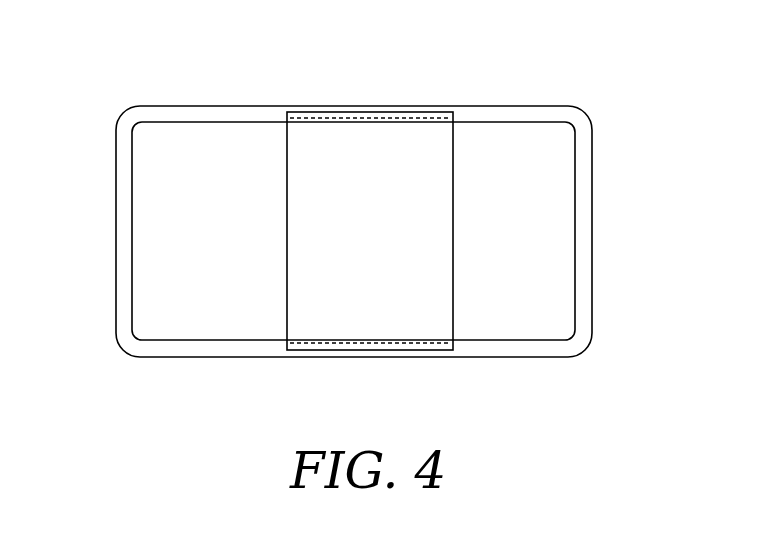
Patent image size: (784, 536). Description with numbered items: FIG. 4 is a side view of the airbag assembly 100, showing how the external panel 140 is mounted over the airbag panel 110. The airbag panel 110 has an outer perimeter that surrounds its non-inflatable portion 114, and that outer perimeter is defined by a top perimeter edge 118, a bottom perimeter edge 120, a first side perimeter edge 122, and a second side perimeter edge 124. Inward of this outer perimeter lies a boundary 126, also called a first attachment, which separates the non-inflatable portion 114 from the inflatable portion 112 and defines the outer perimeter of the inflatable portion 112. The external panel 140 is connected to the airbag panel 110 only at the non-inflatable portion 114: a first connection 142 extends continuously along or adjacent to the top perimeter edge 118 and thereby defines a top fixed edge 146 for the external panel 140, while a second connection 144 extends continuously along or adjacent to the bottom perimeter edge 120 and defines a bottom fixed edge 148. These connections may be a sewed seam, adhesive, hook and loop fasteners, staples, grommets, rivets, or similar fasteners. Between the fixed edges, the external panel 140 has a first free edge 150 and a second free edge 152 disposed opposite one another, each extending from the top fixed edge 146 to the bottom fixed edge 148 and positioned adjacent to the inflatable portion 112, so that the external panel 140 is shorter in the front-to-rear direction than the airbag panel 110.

The airbag assembly 100 is at (80, 37).
The airbag panel 110 is at (322, 231).
The inflatable portion 112 is at (314, 231).
The non-inflatable portion 114 is at (92, 238).
The top perimeter edge 118 is at (523, 81).
The bottom perimeter edge 120 is at (176, 380).
The first side perimeter edge 122 is at (84, 275).
The second side perimeter edge 124 is at (627, 163).
The boundary 126 is at (619, 223).
The external panel 140 is at (344, 211).
The first connection 142 is at (370, 94).
The second connection 144 is at (370, 366).
The top fixed edge 146 is at (375, 88).
The bottom fixed edge 148 is at (413, 373).
The first free edge 150 is at (254, 183).
The second free edge 152 is at (488, 230).